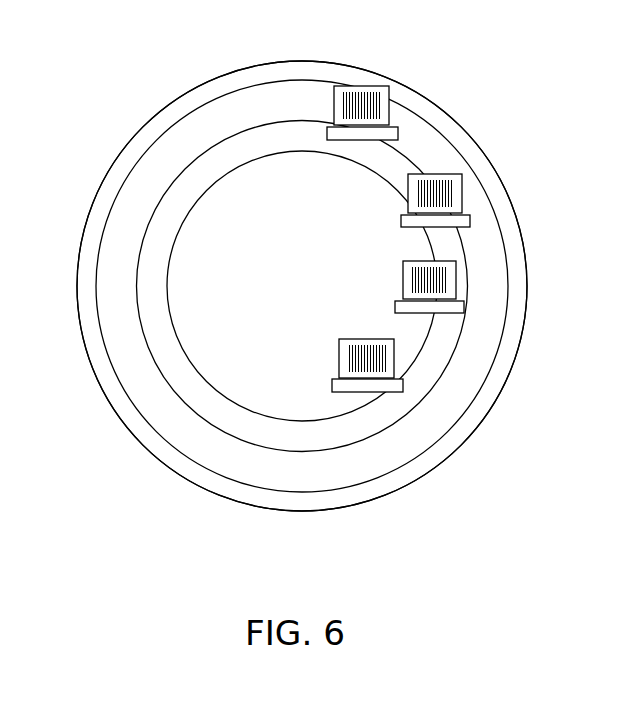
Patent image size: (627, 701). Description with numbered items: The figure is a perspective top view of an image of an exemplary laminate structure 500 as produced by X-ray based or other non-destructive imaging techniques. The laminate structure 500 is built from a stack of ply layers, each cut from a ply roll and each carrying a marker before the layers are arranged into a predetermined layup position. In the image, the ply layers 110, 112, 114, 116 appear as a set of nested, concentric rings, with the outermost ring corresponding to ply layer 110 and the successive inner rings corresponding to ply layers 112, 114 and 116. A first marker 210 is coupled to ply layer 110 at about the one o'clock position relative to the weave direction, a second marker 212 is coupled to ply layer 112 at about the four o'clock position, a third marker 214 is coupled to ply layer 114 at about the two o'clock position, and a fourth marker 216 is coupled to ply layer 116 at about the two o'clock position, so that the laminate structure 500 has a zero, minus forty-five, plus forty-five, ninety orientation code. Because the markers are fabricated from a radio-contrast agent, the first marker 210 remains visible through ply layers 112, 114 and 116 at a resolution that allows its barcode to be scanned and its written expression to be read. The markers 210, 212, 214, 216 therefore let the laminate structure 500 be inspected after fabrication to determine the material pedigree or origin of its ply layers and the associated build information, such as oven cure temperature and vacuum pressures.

The laminate structure 500 is at (452, 70).
The ply layer 110 is at (177, 98).
The ply layer 112 is at (145, 152).
The ply layer 114 is at (143, 231).
The ply layer 116 is at (168, 300).
The first marker 210 is at (378, 86).
The second marker 212 is at (463, 187).
The third marker 214 is at (458, 280).
The fourth marker 216 is at (394, 357).